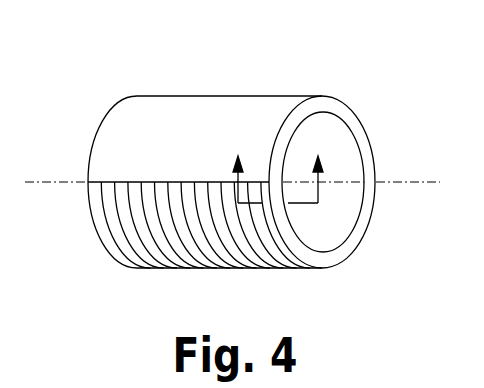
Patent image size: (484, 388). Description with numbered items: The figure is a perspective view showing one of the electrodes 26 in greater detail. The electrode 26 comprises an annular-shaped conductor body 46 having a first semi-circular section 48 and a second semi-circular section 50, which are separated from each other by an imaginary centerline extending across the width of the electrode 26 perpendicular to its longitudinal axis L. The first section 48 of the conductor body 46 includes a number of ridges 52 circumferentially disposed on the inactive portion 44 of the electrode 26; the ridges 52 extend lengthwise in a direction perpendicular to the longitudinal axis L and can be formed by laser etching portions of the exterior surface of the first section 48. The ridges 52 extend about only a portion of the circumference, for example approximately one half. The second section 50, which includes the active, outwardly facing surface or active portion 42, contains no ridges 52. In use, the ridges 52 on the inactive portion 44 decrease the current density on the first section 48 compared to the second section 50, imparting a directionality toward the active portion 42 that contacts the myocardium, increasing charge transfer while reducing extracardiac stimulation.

The electrode 26 is at (237, 169).
The active portion 42 is at (257, 112).
The inactive portion 44 is at (265, 269).
The conductor body 46 is at (375, 158).
The first semi-circular section 48 is at (177, 242).
The second semi-circular section 50 is at (84, 116).
The ridges 52 is at (186, 261).
The longitudinal axis L is at (420, 183).